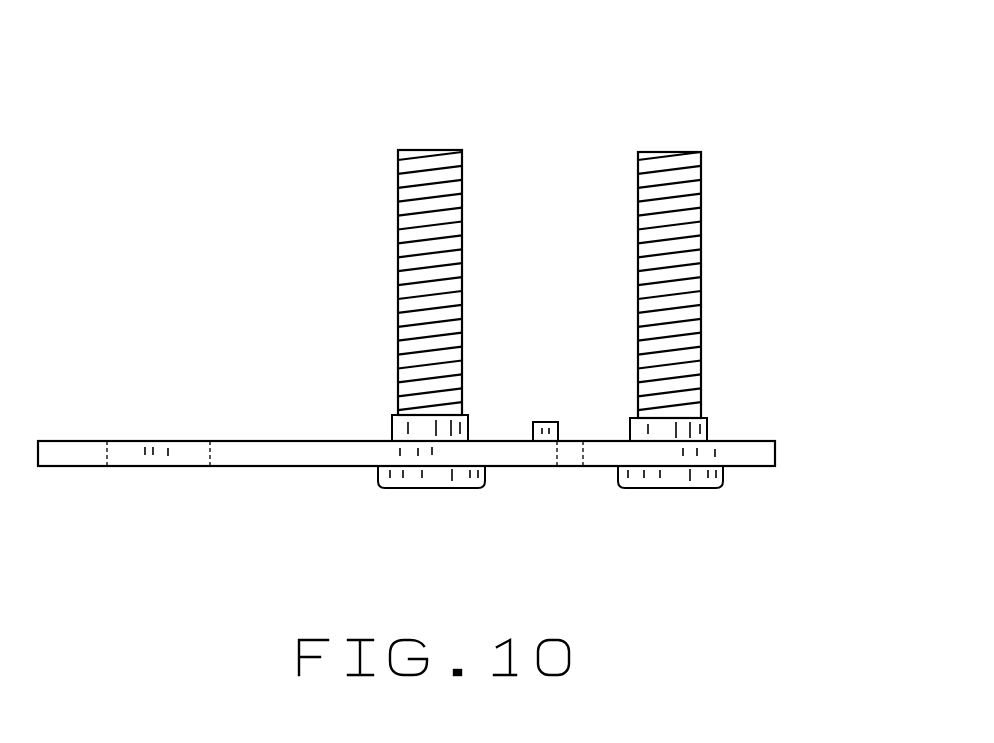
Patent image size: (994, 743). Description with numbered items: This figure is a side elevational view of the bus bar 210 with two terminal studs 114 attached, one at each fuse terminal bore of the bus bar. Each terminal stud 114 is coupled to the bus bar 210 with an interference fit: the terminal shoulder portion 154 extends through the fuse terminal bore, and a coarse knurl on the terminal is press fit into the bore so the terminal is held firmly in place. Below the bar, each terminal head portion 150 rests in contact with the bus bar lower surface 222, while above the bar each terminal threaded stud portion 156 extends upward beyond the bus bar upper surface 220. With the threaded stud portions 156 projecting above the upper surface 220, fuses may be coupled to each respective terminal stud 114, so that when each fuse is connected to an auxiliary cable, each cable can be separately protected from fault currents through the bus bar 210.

The terminal stud 114 is at (442, 122).
The terminal threaded stud portion 156 is at (462, 232).
The terminal shoulder portion 154 is at (396, 430).
The terminal head portion 150 is at (415, 480).
The bus bar 210 is at (280, 432).
The bus bar upper surface 220 is at (490, 440).
The bus bar lower surface 222 is at (515, 467).